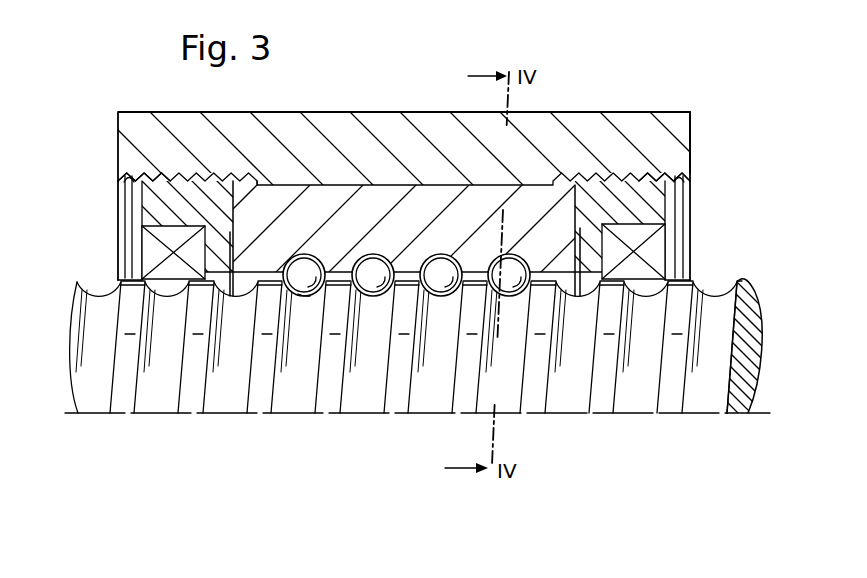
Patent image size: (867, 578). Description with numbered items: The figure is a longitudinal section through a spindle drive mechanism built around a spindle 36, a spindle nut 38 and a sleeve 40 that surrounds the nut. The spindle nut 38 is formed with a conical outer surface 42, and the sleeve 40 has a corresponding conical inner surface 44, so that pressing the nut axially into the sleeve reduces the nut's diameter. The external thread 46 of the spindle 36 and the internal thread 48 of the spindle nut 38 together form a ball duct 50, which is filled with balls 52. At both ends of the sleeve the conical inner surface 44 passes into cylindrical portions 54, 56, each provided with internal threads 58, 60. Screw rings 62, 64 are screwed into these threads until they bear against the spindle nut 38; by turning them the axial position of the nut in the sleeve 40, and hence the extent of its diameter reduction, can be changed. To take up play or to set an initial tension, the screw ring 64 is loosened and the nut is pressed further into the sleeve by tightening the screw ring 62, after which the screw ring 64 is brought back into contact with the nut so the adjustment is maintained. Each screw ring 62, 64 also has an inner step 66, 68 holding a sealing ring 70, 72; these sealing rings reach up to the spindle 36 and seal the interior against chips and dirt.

The spindle 36 is at (466, 365).
The spindle nut 38 is at (294, 195).
The sleeve 40 is at (657, 122).
The conical outer surface 42 is at (387, 187).
The conical inner surface 44 is at (434, 194).
The external thread 46 is at (160, 387).
The internal thread 48 is at (375, 254).
The ball duct 50 is at (318, 254).
The balls 52 is at (360, 297).
The cylindrical portion 54 is at (170, 167).
The cylindrical portion 56 is at (632, 165).
The internal thread 58 is at (132, 178).
The internal thread 60 is at (678, 183).
The screw ring 62 is at (157, 205).
The screw ring 64 is at (657, 207).
The inner step 66 is at (160, 229).
The inner step 68 is at (650, 224).
The sealing ring 70 is at (150, 257).
The sealing ring 72 is at (653, 257).